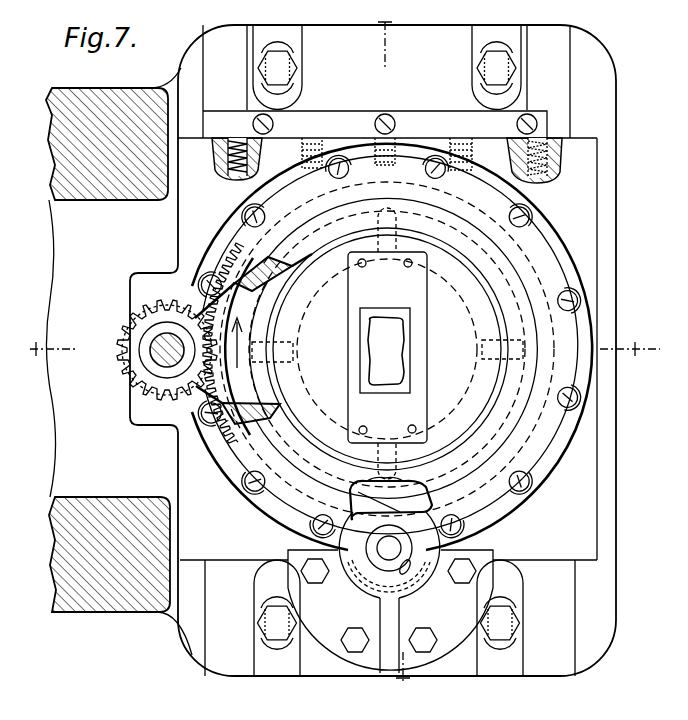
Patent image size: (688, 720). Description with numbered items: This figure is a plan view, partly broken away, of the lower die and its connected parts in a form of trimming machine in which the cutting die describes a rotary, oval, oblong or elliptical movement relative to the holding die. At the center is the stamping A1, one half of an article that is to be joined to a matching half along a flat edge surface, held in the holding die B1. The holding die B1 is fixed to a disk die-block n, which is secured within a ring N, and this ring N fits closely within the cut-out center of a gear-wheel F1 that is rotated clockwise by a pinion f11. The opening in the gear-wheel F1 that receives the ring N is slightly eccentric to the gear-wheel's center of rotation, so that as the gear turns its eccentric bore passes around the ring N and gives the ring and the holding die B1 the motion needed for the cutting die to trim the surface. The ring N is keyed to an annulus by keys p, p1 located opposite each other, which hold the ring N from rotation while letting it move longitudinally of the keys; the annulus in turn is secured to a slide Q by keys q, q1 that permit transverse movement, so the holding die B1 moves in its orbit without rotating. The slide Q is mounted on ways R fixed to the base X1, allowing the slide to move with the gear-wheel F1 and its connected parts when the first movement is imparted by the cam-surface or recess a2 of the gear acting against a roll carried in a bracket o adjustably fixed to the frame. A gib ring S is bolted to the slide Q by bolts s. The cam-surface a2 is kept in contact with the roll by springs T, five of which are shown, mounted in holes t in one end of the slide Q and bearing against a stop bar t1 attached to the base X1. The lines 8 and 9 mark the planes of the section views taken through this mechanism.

The base X1 is at (331, 350).
The springs T is at (562, 140).
The holes t is at (510, 150).
The stop bar t1 is at (375, 124).
The gib ring S is at (392, 347).
The bolts s is at (532, 217).
The ring N is at (235, 343).
The disk die-block n is at (387, 349).
The key p is at (285, 345).
The key p1 is at (488, 347).
The key q is at (387, 325).
The key q1 is at (392, 449).
The stamping A1 is at (410, 378).
The holding die B1 is at (356, 398).
The gear-wheel F1 is at (215, 398).
The pinion f11 is at (120, 353).
The recess a2 is at (352, 492).
The bracket o is at (366, 562).
The ways R is at (388, 613).
The slide Q is at (567, 349).
The section line 8- 8 is at (336, 350).
The section line 9- 9 is at (394, 352).